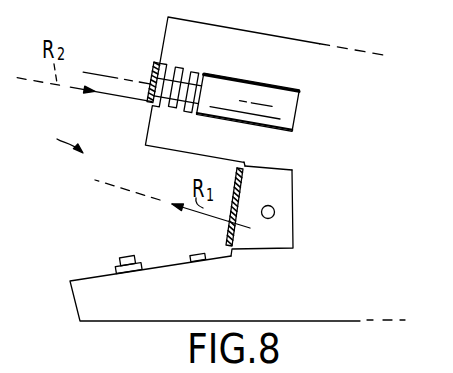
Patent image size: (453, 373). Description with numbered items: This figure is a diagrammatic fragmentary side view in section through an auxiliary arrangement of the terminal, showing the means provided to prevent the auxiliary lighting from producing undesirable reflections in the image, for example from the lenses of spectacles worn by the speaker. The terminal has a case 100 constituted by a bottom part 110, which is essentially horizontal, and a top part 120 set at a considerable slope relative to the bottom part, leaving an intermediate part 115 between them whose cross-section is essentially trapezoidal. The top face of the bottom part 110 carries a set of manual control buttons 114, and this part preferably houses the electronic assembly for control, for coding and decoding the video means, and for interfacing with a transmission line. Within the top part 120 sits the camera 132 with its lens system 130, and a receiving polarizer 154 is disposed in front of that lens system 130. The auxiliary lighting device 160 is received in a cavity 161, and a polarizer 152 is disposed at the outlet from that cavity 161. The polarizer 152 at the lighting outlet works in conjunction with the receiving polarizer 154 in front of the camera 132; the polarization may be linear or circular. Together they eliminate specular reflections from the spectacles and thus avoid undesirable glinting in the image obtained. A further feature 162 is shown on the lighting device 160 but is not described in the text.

The case 100 is at (62, 133).
The bottom part 110 is at (210, 308).
The manual control buttons 114 is at (121, 259).
The intermediate part 115 is at (375, 238).
The top part 120 is at (223, 151).
The lens system 130 is at (190, 67).
The camera 132 is at (269, 83).
The polarizer 152 is at (226, 238).
The receiving polarizer 154 is at (153, 69).
The auxiliary lighting device 160 is at (278, 254).
The cavity 161 is at (273, 171).
The pivot hole 162 is at (275, 210).